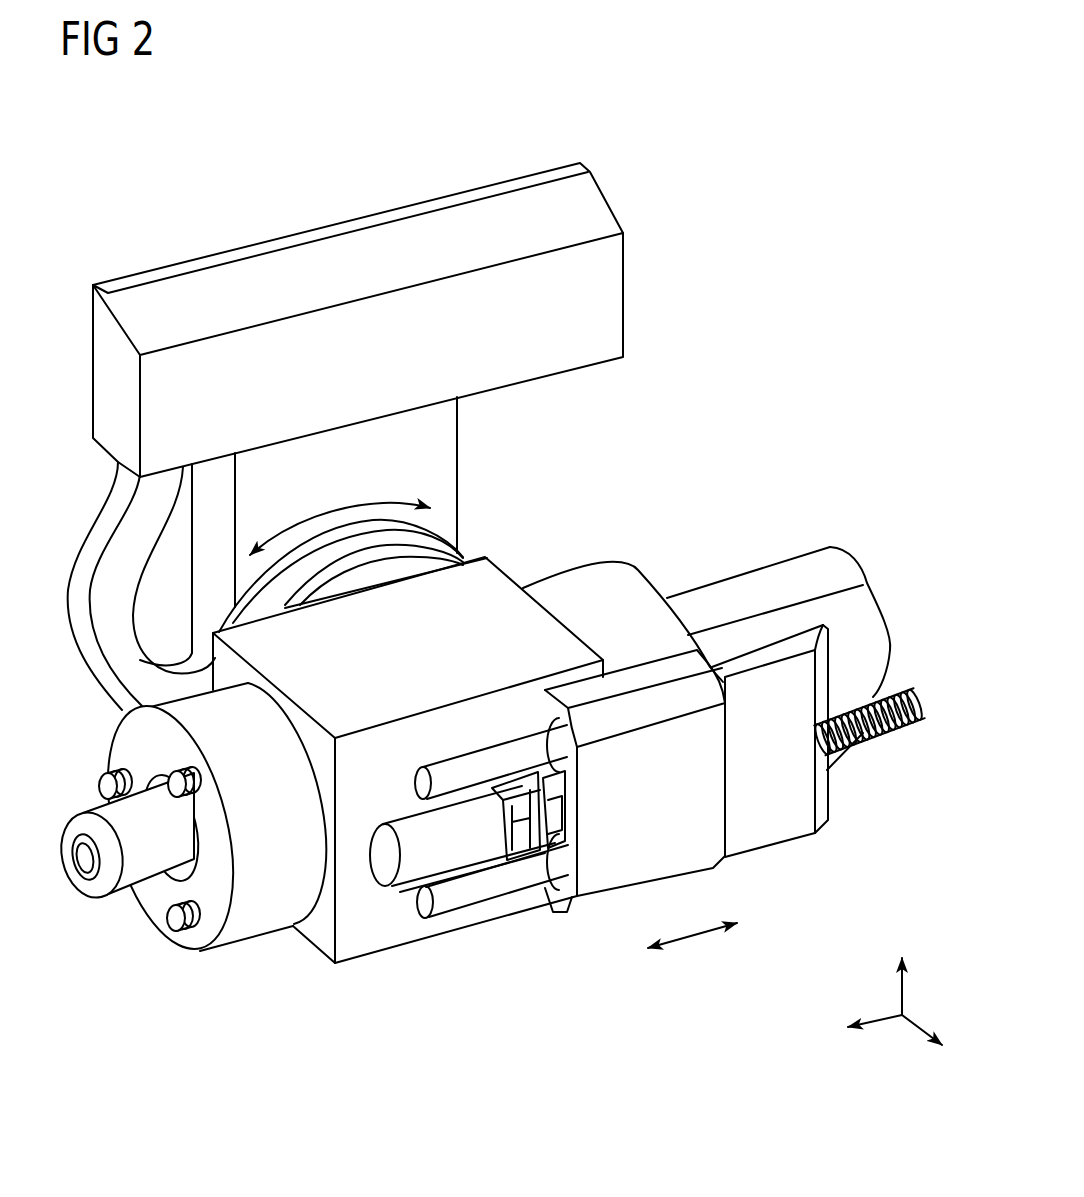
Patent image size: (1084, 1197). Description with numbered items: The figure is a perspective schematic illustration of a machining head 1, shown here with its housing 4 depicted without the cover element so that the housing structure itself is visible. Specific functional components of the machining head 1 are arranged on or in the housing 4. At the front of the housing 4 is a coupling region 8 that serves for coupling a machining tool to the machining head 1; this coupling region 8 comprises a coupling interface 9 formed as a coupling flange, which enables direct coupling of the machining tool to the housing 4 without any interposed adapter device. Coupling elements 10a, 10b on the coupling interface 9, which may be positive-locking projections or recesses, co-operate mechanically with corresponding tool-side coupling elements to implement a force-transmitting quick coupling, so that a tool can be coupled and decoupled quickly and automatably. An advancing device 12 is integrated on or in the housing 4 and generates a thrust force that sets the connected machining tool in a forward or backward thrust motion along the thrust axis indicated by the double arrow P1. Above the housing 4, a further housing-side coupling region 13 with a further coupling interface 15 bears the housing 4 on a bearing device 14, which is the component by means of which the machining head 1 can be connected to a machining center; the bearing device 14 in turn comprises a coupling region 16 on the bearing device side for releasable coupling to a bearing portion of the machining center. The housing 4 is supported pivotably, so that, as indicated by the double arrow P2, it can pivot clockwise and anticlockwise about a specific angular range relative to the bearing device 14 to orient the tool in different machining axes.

The machining head 1 is at (712, 218).
The housing 4 is at (397, 987).
The coupling region 8 is at (238, 973).
The coupling interface 9 is at (130, 730).
The coupling element 10a is at (177, 920).
The coupling element 10b is at (107, 808).
The advancing device 12 is at (790, 870).
The further housing-side coupling region 13 is at (473, 467).
The bearing device 14 is at (130, 268).
The further coupling interface 15 is at (400, 543).
The coupling region on the bearing device side 16 is at (430, 228).
The thrust axis double arrow P1 is at (702, 937).
The pivoting double arrow P2 is at (377, 502).